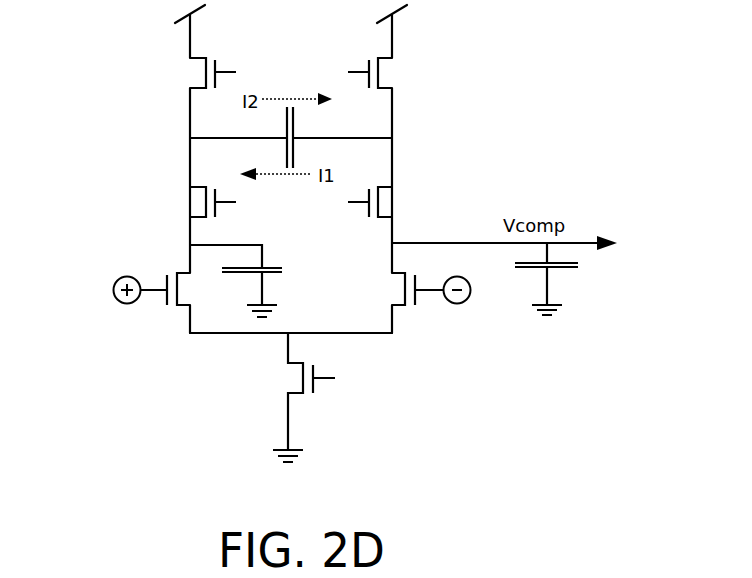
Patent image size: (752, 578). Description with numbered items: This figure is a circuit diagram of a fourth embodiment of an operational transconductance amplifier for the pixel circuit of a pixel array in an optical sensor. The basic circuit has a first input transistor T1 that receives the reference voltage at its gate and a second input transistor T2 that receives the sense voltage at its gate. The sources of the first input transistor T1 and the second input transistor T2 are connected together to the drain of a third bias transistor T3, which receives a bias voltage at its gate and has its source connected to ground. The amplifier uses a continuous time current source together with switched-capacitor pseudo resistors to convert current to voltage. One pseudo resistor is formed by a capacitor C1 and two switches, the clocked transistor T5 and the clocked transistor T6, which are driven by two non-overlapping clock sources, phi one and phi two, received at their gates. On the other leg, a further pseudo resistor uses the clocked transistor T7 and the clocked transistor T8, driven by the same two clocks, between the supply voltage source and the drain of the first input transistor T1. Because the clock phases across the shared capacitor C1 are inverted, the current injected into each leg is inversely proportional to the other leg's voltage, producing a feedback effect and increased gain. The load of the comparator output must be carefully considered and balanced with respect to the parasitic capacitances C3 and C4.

The first input transistor T1 is at (168, 278).
The second input transistor T2 is at (406, 295).
The third bias transistor T3 is at (303, 382).
The clocked transistor T5 is at (381, 72).
The clocked transistor T6 is at (381, 203).
The clocked transistor T7 is at (205, 72).
The clocked transistor T8 is at (204, 203).
The capacitor C1 is at (303, 134).
The parasitic capacitance C3 is at (263, 267).
The parasitic capacitance C4 is at (568, 267).